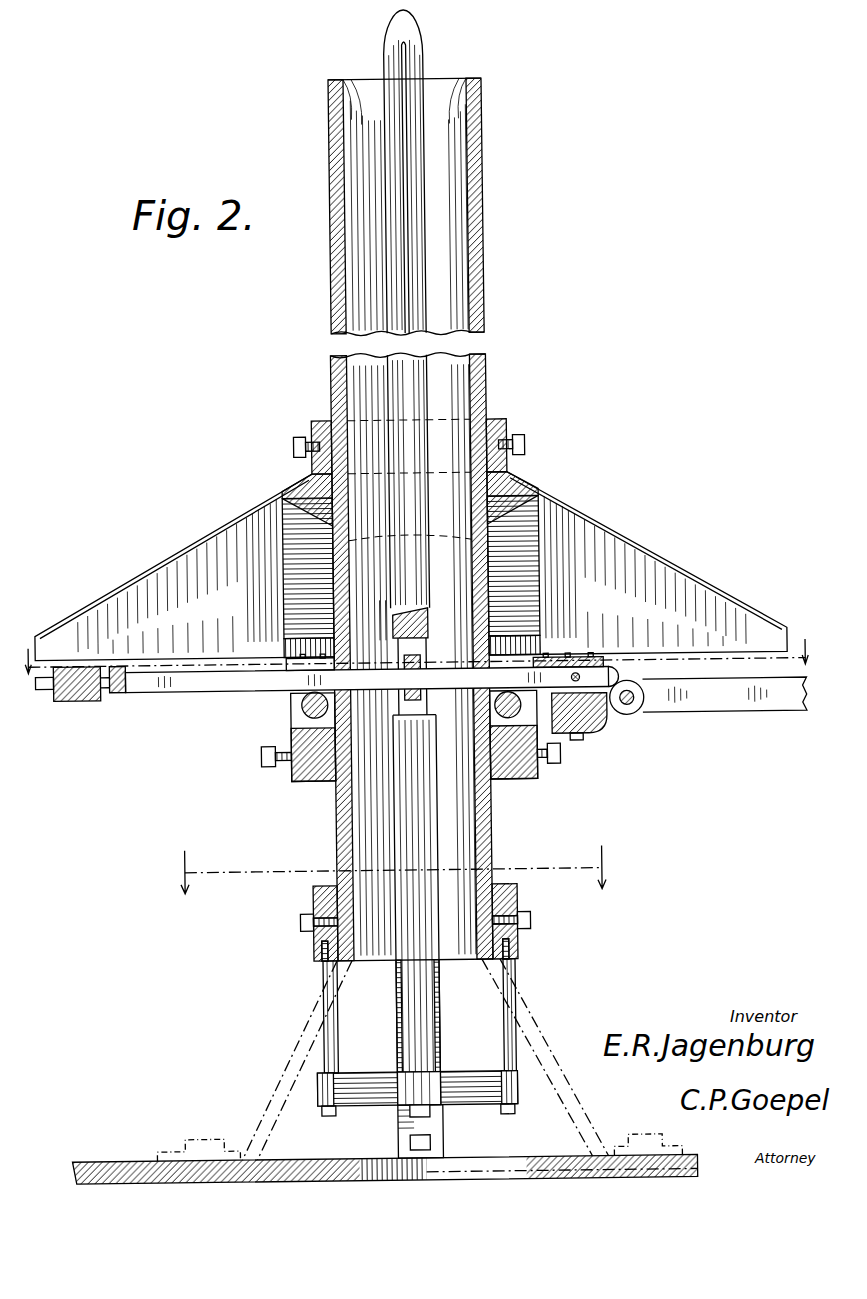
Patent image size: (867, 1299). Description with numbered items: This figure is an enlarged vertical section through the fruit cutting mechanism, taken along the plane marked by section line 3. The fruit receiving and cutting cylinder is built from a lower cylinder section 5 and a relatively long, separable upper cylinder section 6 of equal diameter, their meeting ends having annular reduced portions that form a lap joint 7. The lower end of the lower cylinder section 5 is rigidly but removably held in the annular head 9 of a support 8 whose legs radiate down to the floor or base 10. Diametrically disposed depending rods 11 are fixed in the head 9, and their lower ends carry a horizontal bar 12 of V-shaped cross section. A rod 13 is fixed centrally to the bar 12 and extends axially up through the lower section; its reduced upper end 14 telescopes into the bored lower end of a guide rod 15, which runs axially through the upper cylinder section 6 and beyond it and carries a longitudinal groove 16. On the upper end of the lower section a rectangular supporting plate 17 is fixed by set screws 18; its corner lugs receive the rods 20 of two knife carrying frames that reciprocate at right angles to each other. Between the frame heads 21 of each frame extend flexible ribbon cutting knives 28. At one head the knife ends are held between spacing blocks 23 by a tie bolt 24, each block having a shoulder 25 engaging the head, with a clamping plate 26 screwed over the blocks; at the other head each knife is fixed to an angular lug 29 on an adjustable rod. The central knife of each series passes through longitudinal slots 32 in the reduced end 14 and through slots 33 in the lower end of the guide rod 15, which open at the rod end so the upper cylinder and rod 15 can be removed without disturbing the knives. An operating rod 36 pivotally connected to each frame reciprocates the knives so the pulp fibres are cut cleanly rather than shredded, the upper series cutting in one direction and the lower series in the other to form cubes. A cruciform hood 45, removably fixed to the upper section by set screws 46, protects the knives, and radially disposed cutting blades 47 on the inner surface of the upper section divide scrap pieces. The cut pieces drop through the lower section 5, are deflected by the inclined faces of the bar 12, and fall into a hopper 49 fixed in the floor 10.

The section line 3- 3 is at (418, 767).
The lower cylinder section 5 is at (485, 810).
The upper cylinder section 6 is at (479, 316).
The lap joint 7 is at (329, 711).
The support 8 is at (564, 1044).
The annular head 9 is at (509, 893).
The floor or base 10 is at (627, 1160).
The depending rods 11 is at (313, 997).
The horizontal bar 12 is at (452, 1072).
The rod 13 is at (401, 962).
The reduced upper end 14 is at (420, 646).
The guide rod 15 is at (427, 396).
The longitudinal groove 16 is at (407, 263).
The supporting plate 17 is at (294, 780).
The set screws 18 is at (259, 766).
The rods of knife carrying frames 20 is at (156, 670).
The frame heads 21 is at (67, 698).
The spacing blocks 23 is at (569, 738).
The tie bolt 24 is at (571, 679).
The shoulder 25 is at (628, 710).
The clamping plate 26 is at (561, 660).
The cutting knives 28 is at (254, 690).
The angular lug 29 is at (109, 692).
The longitudinal slots 32 is at (418, 676).
The slots 33 is at (412, 705).
The operating rod 36 is at (775, 716).
The cruciform hood 45 is at (585, 516).
The set screws 46 is at (291, 440).
The radially disposed cutting blades 47 is at (380, 628).
The hopper 49 is at (460, 1176).